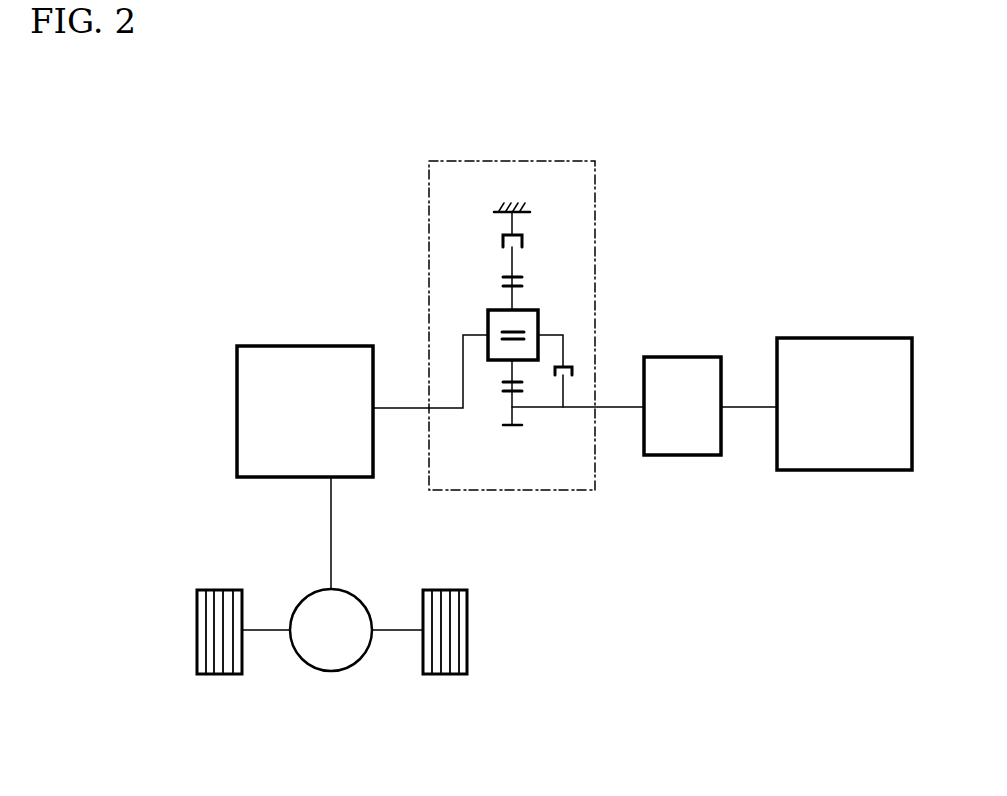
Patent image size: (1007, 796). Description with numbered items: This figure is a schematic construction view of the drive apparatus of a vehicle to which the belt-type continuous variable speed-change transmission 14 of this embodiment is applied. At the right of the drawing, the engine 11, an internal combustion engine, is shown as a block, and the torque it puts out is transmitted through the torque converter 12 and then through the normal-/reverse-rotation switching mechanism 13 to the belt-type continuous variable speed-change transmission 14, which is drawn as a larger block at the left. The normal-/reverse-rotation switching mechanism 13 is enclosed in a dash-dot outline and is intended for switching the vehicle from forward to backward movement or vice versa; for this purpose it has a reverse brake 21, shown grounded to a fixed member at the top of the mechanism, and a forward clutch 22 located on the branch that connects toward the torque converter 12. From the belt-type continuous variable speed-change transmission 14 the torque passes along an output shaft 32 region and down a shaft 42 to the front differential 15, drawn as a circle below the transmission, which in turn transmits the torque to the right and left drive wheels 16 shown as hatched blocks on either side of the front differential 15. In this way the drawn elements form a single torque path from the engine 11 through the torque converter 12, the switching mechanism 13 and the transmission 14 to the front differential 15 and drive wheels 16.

The engine 11 is at (847, 337).
The torque converter 12 is at (681, 356).
The normal-/reverse-rotation switching mechanism 13 is at (568, 286).
The belt-type continuous variable speed-change transmission 14 is at (316, 345).
The front differential 15 is at (331, 672).
The drive wheels 16 is at (197, 634).
The reverse brake 21 is at (534, 233).
The forward clutch 22 is at (575, 356).
The output shaft 32 is at (392, 413).
The propeller shaft 42 is at (331, 530).